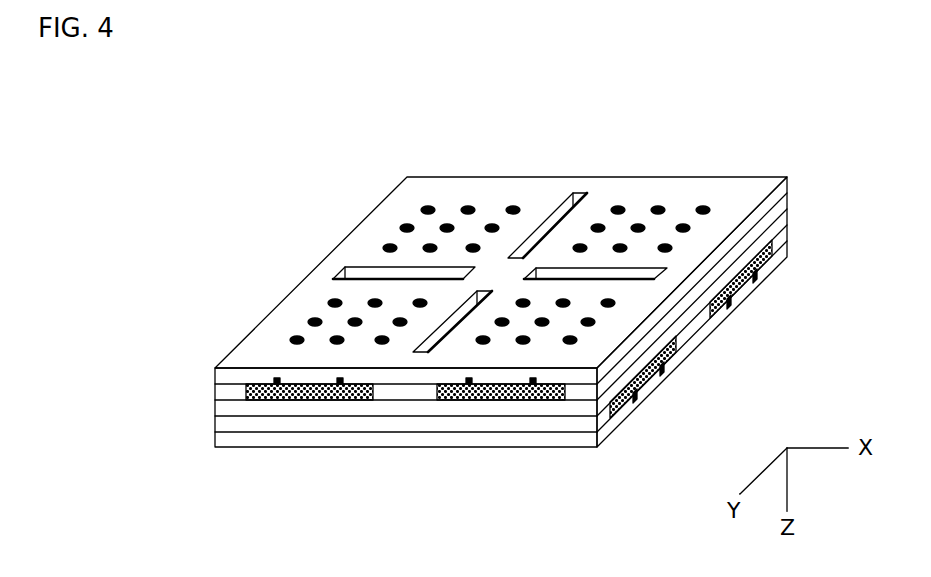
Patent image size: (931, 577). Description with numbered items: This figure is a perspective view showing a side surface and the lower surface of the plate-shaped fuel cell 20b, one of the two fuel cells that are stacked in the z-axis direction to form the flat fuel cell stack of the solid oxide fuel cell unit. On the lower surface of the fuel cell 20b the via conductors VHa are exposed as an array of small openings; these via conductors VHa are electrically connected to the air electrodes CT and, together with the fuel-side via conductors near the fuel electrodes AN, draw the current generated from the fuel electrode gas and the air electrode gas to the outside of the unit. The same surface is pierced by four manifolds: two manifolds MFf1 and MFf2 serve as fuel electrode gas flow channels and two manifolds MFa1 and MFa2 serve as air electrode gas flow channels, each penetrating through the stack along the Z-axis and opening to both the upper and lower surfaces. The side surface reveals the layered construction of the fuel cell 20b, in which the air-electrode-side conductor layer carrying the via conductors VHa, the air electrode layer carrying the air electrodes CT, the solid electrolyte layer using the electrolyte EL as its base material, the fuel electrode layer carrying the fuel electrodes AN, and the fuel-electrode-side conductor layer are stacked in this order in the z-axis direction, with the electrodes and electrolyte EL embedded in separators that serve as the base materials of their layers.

The fuel cell 20b is at (262, 158).
The via conductors VHa is at (493, 223).
The manifold for air electrode gas MFa1 is at (595, 198).
The manifold for air electrode gas MFa2 is at (392, 268).
The manifold for fuel electrode gas MFf1 is at (447, 327).
The manifold for fuel electrode gas MFf2 is at (563, 204).
The fuel electrodes AN is at (666, 369).
The air electrodes CT is at (470, 389).
The electrolyte EL is at (516, 404).